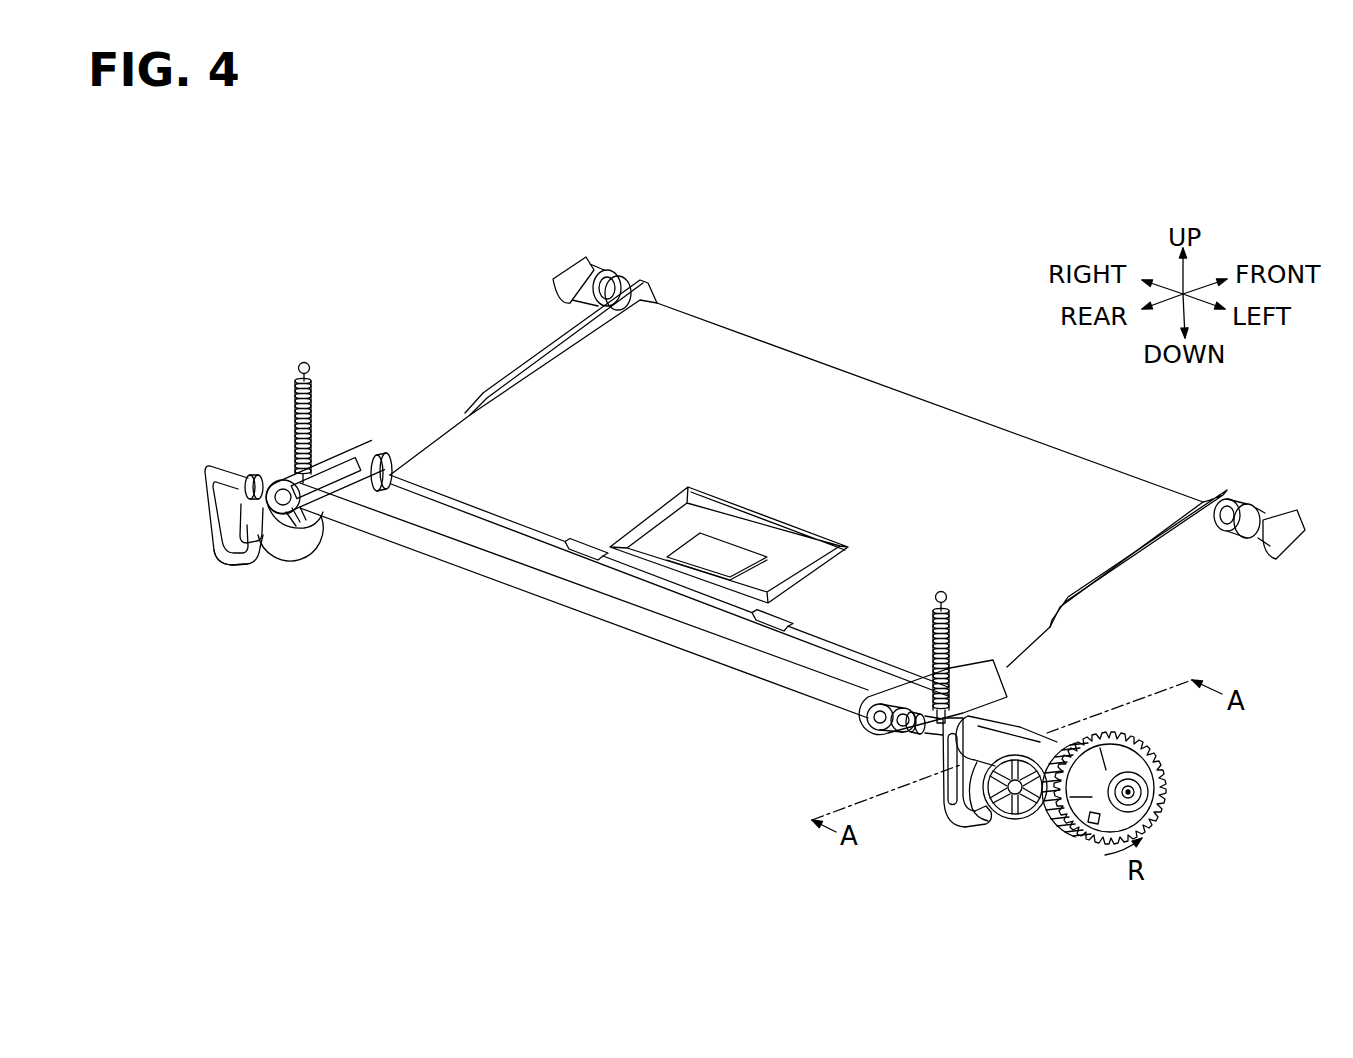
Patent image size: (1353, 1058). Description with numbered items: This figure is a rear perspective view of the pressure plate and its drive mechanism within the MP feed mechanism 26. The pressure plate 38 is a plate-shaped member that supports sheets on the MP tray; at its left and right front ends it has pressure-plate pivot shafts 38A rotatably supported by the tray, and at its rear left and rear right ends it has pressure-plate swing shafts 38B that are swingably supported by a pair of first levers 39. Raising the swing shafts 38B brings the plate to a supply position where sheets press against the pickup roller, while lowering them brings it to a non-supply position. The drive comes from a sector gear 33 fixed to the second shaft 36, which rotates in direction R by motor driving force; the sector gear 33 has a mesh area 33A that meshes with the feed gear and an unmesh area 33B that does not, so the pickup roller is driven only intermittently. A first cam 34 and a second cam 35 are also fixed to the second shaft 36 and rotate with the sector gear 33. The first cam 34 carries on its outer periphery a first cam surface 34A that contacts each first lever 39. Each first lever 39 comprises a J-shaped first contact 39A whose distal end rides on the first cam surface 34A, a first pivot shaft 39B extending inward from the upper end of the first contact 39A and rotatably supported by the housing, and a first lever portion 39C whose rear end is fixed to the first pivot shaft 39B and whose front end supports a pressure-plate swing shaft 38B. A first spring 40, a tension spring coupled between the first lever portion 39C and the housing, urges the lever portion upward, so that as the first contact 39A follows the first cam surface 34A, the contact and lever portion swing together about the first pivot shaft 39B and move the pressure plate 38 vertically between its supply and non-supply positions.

The MP feed mechanism 26 is at (320, 248).
The sector gear 33 is at (1077, 846).
The mesh area 33A is at (1057, 830).
The unmesh area 33B is at (1067, 738).
The first cam 34 is at (282, 560).
The first cam surface 34A is at (248, 517).
The second cam 35 is at (304, 532).
The second shaft 36 is at (618, 615).
The pressure plate 38 is at (878, 411).
The pressure-plate pivot shaft 38A is at (591, 278).
The pressure-plate swing shaft 38B is at (383, 455).
The first lever 39 is at (197, 466).
The first contact 39A is at (215, 555).
The first pivot shaft 39B is at (228, 470).
The first lever portion 39C is at (340, 450).
The first spring 40 is at (293, 384).